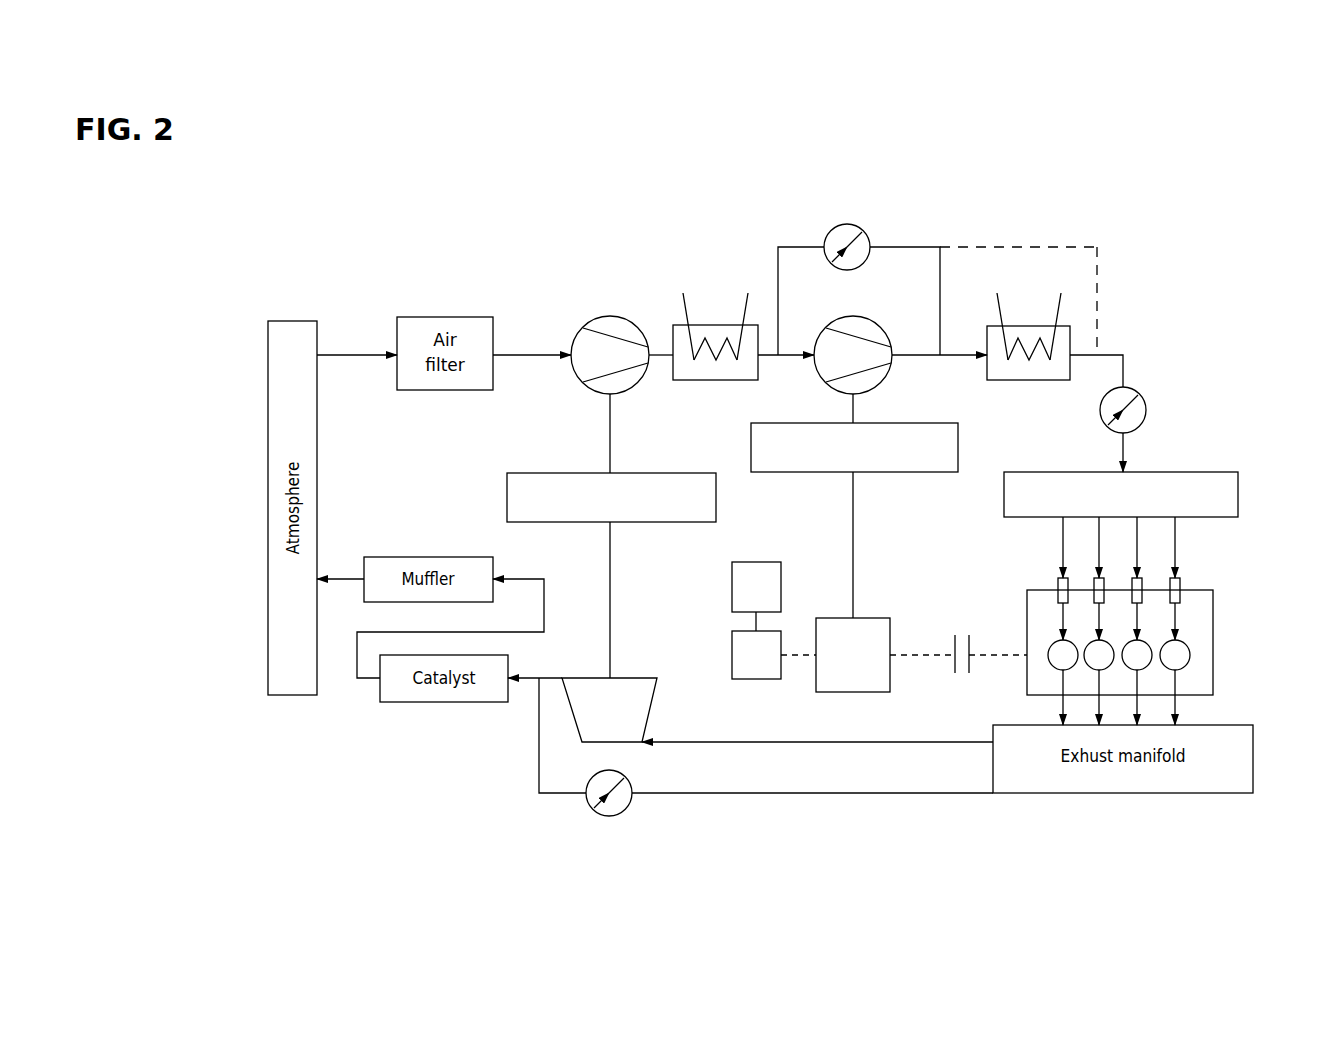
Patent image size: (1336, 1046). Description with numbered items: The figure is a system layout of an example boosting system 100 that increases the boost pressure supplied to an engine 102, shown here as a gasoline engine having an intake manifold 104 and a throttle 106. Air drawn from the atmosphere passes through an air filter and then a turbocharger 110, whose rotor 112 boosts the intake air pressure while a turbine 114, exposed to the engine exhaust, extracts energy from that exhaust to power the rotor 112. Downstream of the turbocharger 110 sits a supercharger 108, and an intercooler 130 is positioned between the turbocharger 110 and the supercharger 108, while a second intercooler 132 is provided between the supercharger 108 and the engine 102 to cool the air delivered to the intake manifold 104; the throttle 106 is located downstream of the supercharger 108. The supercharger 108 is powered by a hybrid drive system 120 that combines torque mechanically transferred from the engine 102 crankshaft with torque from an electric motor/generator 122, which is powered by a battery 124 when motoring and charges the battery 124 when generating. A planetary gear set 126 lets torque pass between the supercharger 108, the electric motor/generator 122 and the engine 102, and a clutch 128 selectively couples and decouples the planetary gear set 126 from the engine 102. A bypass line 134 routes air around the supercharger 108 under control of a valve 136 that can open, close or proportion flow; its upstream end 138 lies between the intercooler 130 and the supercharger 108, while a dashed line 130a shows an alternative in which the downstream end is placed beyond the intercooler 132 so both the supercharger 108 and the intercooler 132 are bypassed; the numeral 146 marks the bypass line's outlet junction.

The boosting system 100 is at (355, 265).
The engine 102 is at (1213, 643).
The intake manifold 104 is at (1238, 493).
The throttle 106 is at (1146, 405).
The supercharger 108 is at (878, 322).
The turbocharger 110 is at (578, 325).
The rotor 112 is at (600, 332).
The turbine 114 is at (633, 678).
The hybrid drive system 120 is at (848, 595).
The electric motor/generator 122 is at (732, 655).
The battery 124 is at (732, 587).
The planetary gear set 126 is at (873, 618).
The clutch 128 is at (970, 638).
The intercooler 130 is at (697, 380).
The dash line 130a is at (1045, 247).
The intercooler 132 is at (1028, 380).
The bypass line 134 is at (778, 258).
The valve 136 is at (847, 224).
The upstream end 138 is at (778, 355).
The bypass outlet 146 is at (940, 355).